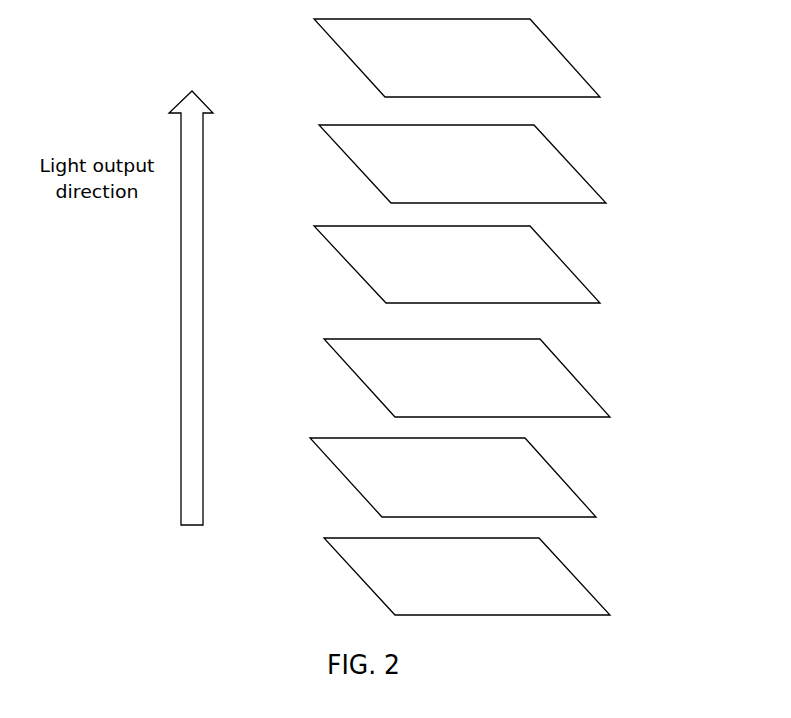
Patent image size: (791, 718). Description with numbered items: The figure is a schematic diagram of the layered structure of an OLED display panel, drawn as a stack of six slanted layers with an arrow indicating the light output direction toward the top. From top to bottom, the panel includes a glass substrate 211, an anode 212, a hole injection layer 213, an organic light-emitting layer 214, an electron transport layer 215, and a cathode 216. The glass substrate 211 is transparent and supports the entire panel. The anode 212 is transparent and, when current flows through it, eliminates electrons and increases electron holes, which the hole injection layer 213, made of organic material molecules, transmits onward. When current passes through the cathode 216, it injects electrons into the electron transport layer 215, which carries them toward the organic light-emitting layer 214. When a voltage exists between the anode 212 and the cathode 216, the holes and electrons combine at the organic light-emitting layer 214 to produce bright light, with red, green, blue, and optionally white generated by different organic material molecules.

The glass substrate 211 is at (597, 94).
The anode 212 is at (592, 188).
The hole injection layer 213 is at (588, 290).
The organic light-emitting layer 214 is at (583, 388).
The electron transport layer 215 is at (572, 490).
The cathode 216 is at (585, 587).